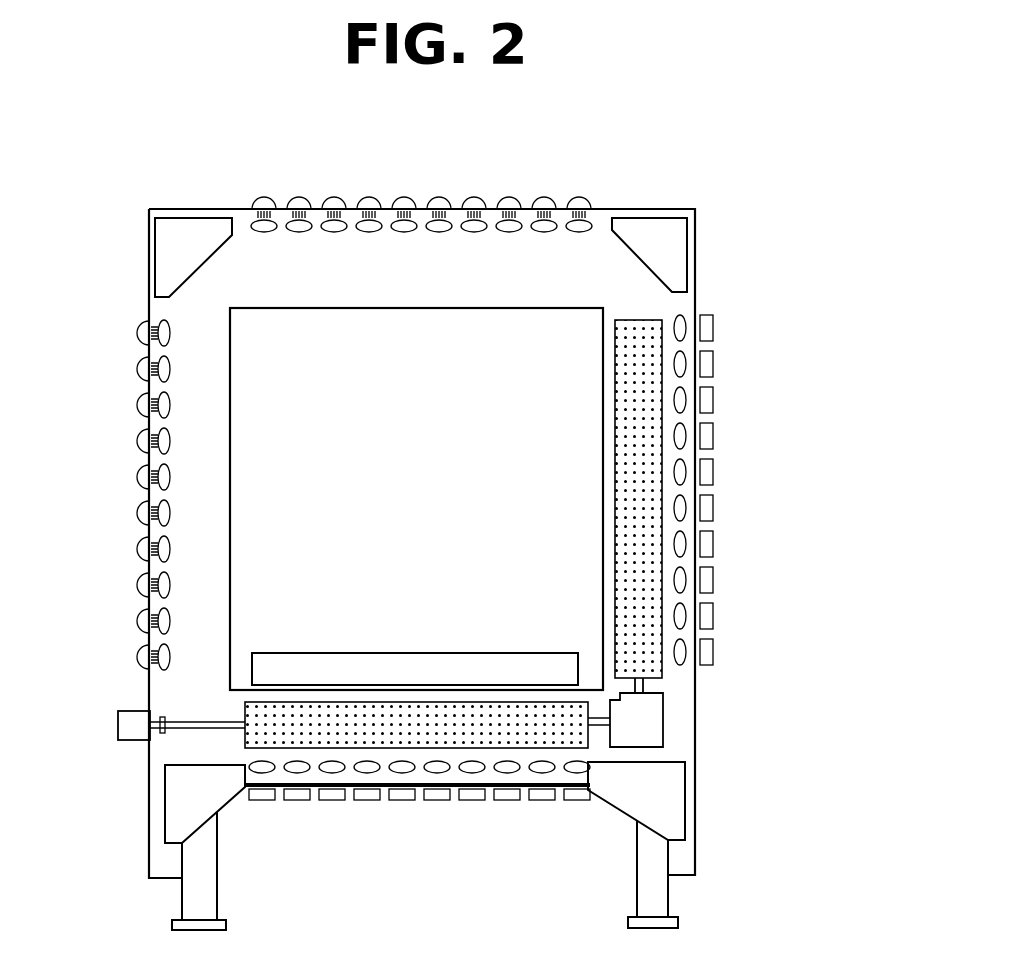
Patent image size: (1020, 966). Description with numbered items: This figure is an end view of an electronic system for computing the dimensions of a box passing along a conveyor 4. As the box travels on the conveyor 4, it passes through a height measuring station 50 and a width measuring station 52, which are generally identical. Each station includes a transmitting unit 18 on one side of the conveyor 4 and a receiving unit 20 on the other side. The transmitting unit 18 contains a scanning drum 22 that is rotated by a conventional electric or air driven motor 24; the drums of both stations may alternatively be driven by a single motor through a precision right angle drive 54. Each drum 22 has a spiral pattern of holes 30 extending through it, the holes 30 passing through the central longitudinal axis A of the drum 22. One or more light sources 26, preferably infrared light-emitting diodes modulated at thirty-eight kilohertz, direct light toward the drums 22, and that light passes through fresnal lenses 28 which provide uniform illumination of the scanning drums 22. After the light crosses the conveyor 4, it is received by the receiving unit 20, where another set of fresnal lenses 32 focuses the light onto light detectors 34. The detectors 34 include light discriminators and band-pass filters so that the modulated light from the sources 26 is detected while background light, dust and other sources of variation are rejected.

The transmitting unit 18 is at (532, 172).
The light sources 26 is at (436, 192).
The fresnal lenses 28 is at (368, 234).
The width measuring station 52 is at (452, 277).
The height measuring station 50 is at (666, 320).
The receiving unit 20 is at (596, 534).
The scanning drum 22 is at (540, 703).
The central longitudinal axis A is at (428, 720).
The holes 30 is at (628, 410).
The fresnal lenses 32 is at (684, 468).
The light detectors 34 is at (710, 577).
The conveyor 4 is at (376, 660).
The motor 24 is at (133, 740).
The precision right angle drive 54 is at (658, 712).